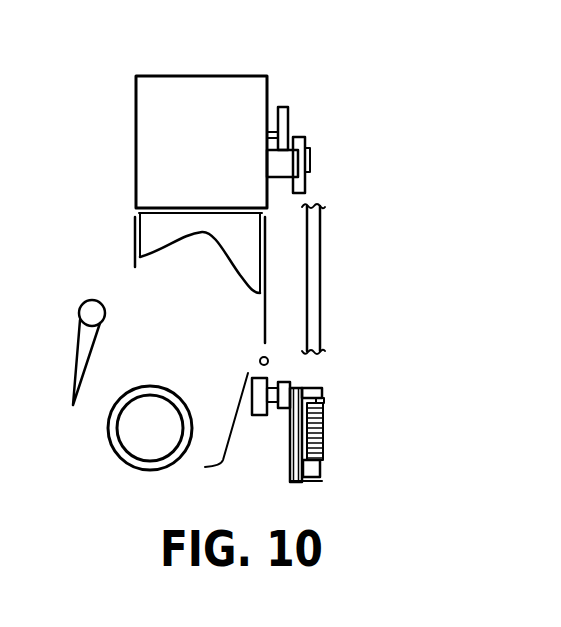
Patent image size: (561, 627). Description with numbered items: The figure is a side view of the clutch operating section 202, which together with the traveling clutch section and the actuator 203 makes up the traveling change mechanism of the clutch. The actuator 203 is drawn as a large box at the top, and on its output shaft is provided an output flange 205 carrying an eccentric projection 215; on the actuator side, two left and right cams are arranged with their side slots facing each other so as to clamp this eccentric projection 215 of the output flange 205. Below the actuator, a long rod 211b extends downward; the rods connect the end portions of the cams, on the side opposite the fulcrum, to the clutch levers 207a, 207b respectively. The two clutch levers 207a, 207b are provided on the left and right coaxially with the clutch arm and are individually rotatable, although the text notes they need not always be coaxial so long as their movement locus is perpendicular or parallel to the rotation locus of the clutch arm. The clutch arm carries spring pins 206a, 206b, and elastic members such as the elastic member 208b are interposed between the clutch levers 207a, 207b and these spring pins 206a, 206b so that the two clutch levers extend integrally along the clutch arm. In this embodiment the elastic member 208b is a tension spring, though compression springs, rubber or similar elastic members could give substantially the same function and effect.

The actuator 203 is at (218, 76).
The output flange 205 is at (288, 113).
The eccentric projection 215 is at (311, 160).
The clutch operating section 202 is at (348, 256).
The rod 211b is at (316, 317).
The spring pin 206a is at (295, 386).
The spring pin 206b is at (323, 400).
The elastic member 208b is at (320, 442).
The clutch lever 207a is at (298, 462).
The clutch lever 207b is at (303, 479).